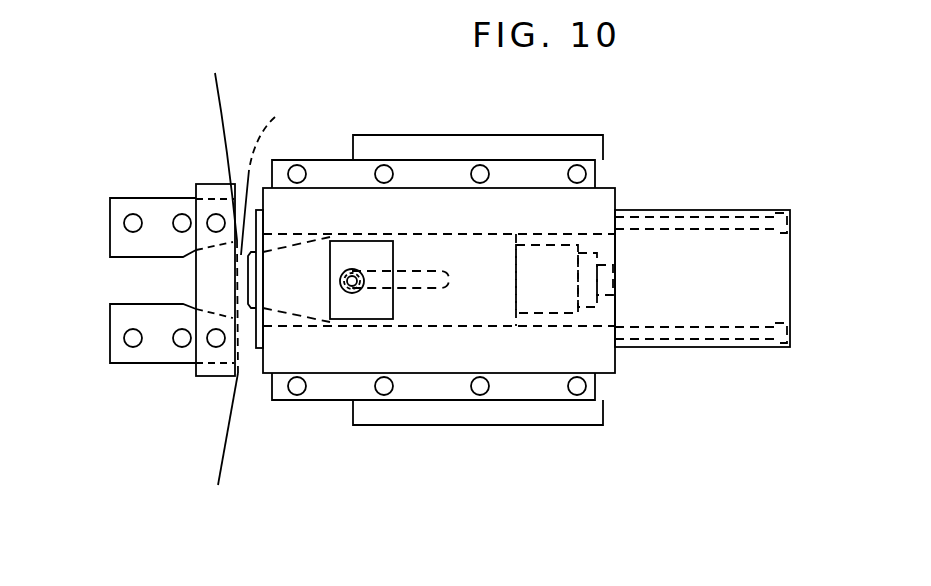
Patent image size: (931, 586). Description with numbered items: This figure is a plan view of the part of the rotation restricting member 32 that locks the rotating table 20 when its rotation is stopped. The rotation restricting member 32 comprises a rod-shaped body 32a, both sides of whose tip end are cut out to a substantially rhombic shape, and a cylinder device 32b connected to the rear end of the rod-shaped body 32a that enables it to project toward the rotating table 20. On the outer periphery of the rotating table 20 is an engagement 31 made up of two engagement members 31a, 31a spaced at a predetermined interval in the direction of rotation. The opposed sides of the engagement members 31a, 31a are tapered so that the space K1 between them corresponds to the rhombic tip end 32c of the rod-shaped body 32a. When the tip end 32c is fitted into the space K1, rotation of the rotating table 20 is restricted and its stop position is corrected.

The rotating table 20 is at (210, 110).
The space K1 is at (271, 172).
The engagement 31 is at (170, 269).
The engagement member 31a is at (178, 208).
The rotation restricting member 32 is at (638, 200).
The rod-shaped body 32a is at (438, 255).
The cylinder device 32b is at (715, 255).
The tip end 32c is at (277, 298).